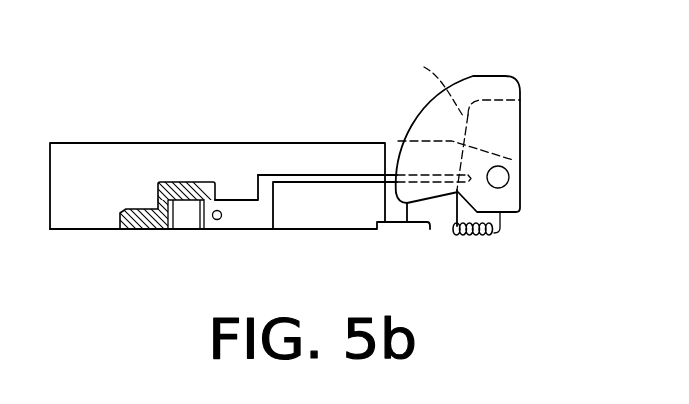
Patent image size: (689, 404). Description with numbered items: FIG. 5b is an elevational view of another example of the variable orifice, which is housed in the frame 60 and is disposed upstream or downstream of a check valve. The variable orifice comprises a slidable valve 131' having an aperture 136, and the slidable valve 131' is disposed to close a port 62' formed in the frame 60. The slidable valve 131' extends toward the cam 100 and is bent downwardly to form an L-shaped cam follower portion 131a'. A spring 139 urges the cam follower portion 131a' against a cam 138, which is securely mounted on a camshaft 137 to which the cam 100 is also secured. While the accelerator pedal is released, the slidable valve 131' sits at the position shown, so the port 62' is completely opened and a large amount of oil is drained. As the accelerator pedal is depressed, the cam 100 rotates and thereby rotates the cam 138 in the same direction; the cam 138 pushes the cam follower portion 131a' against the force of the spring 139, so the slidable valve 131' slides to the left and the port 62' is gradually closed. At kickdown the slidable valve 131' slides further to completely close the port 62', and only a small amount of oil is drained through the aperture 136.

The frame 60 is at (245, 152).
The port 62' is at (160, 230).
The cam 100 is at (502, 75).
The slidable valve 131' is at (364, 230).
The cam follower portion 131a' is at (422, 236).
The aperture 136 is at (220, 220).
The camshaft 137 is at (499, 177).
The cam 138 is at (425, 84).
The spring 139 is at (480, 237).